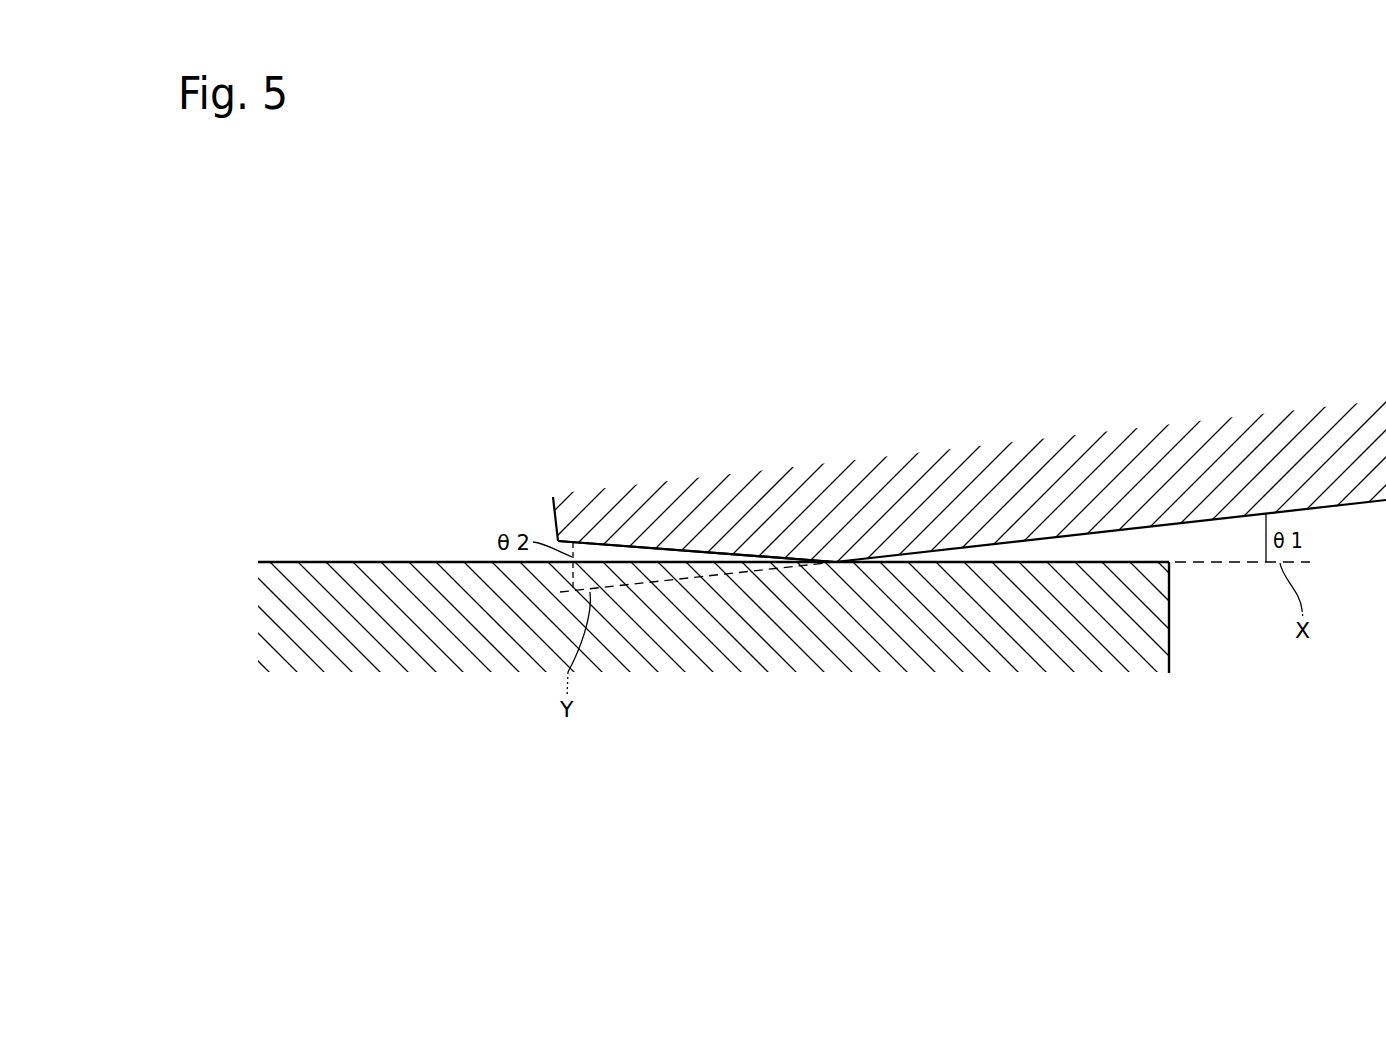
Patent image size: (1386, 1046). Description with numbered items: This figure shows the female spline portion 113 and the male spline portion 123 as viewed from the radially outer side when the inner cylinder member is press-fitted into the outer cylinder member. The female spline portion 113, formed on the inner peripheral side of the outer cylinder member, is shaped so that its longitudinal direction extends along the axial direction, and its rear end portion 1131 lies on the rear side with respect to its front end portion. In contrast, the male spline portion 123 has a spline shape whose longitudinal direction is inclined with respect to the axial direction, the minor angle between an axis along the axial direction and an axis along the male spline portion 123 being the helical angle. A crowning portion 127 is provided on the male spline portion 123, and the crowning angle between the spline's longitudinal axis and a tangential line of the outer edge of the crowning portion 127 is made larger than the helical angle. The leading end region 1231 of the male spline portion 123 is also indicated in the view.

The female spline portion 113 is at (400, 593).
The rear end portion of the female spline portion 1131 is at (1169, 643).
The male spline portion 123 is at (1262, 455).
The tip end portion of second member 1231 is at (552, 497).
The crowning portion 127 is at (650, 547).